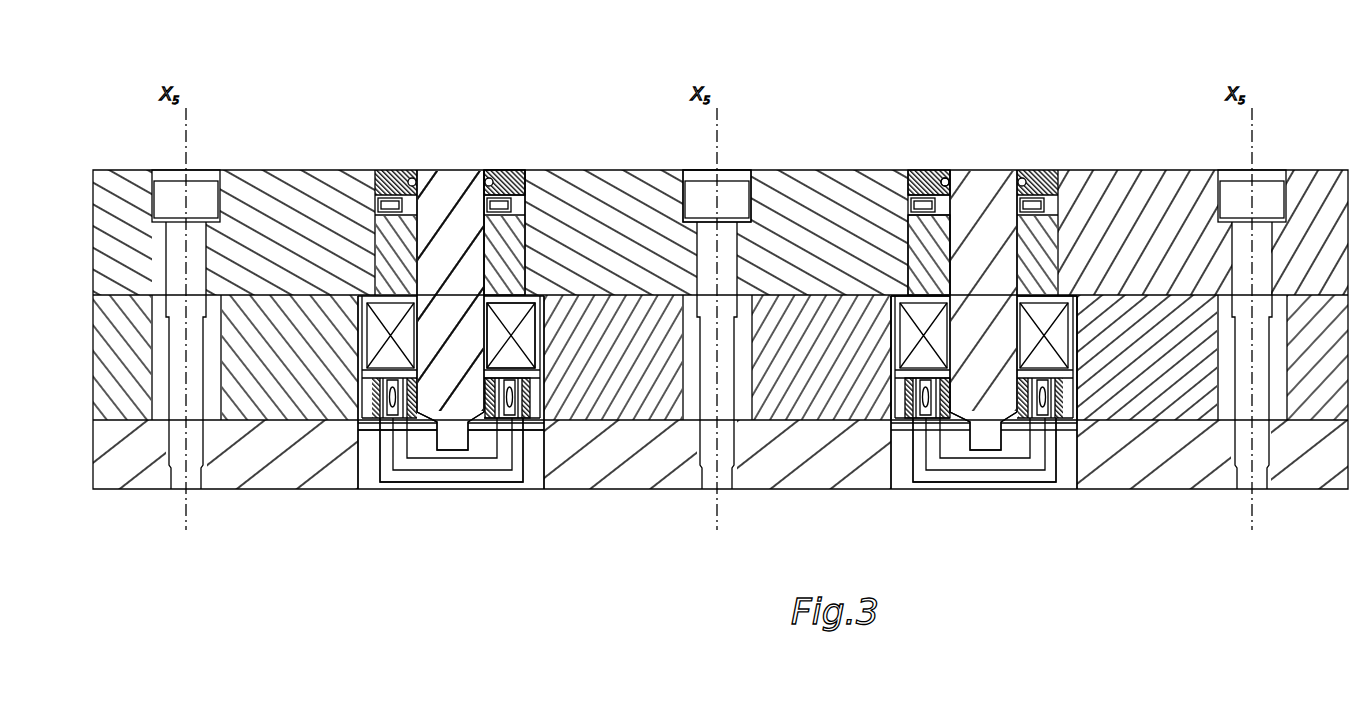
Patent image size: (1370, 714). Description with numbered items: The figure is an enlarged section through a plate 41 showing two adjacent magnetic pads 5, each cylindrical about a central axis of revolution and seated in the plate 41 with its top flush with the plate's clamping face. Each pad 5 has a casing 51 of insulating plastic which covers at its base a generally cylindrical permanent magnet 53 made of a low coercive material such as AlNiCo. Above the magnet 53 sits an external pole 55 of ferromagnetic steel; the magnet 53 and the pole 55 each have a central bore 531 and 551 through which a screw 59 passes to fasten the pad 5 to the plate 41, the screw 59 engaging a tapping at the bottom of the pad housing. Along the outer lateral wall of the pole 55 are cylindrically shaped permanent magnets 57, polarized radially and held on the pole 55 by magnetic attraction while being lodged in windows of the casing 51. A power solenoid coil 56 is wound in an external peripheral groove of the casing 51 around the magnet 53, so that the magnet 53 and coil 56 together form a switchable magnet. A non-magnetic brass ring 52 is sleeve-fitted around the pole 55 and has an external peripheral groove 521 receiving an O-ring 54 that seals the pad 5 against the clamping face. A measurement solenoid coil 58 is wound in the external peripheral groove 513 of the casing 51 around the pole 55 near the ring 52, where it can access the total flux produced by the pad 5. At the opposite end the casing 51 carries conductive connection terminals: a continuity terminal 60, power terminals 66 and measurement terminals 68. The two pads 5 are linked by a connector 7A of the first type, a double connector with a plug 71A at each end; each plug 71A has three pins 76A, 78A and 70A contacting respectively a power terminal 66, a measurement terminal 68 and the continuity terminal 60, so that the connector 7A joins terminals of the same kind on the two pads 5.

The magnetic pad 5 is at (262, 158).
The plate 41 is at (441, 180).
The casing 51 is at (925, 291).
The ring 52 is at (505, 170).
The permanent magnet 53 is at (792, 400).
The O-ring 54 is at (484, 186).
The external pole 55 is at (612, 190).
The power solenoid coil 56 is at (497, 325).
The permanent magnets 57 is at (932, 247).
The measurement solenoid coil 58 is at (953, 177).
The screw 59 is at (200, 458).
The continuity terminal 60 is at (885, 400).
The power terminal 66 is at (945, 377).
The measurement terminal 68 is at (945, 379).
The external peripheral groove 513 is at (450, 291).
The external peripheral groove 521 is at (968, 168).
The central bore 531 is at (743, 398).
The central bore 551 is at (725, 170).
The connector 7A is at (530, 470).
The pin 70A is at (522, 398).
The plug 71A is at (366, 432).
The pin 76A is at (500, 358).
The pin 78A is at (462, 408).